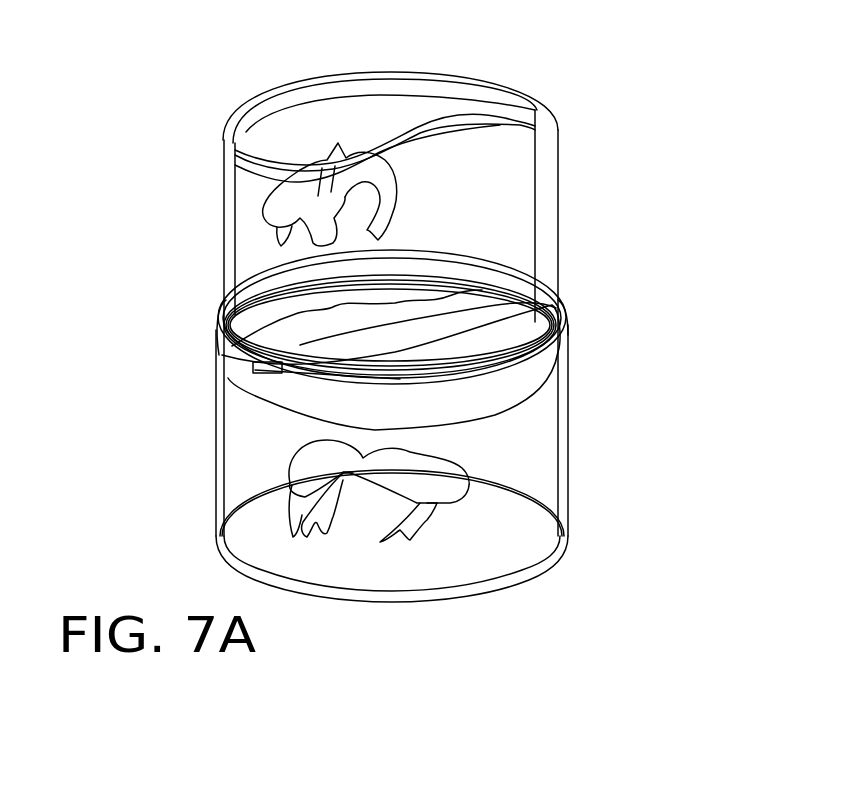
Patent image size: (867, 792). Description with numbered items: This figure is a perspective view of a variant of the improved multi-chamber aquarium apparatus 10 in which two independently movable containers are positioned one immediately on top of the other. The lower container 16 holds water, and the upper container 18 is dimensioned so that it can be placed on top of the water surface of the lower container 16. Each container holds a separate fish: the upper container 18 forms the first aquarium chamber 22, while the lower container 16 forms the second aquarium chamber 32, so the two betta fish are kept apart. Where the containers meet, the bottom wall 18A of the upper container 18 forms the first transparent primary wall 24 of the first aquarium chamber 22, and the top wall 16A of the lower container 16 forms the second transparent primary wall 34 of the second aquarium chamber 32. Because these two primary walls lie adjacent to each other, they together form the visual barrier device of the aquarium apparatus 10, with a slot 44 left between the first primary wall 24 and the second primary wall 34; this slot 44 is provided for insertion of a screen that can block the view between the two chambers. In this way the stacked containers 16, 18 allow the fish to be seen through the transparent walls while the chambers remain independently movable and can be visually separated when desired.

The multi-chamber aquarium apparatus 10 is at (228, 58).
The container 16 is at (568, 475).
The top wall of container 16A is at (248, 370).
The container 18 is at (225, 241).
The bottom wall of container 18A is at (233, 358).
The first aquarium chamber 22 is at (332, 122).
The first transparent primary wall 24 is at (367, 375).
The second aquarium chamber 32 is at (507, 347).
The second transparent primary wall 34 is at (415, 340).
The slot 44 is at (365, 352).